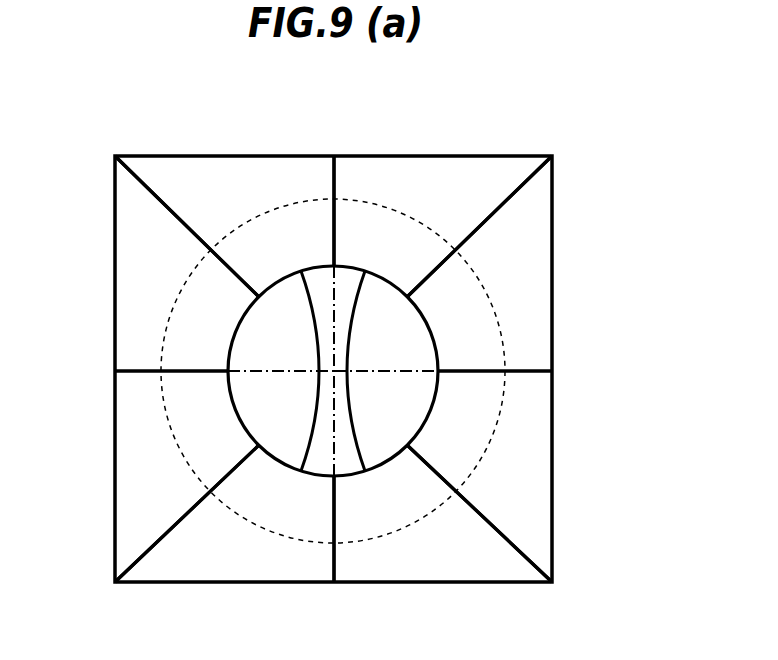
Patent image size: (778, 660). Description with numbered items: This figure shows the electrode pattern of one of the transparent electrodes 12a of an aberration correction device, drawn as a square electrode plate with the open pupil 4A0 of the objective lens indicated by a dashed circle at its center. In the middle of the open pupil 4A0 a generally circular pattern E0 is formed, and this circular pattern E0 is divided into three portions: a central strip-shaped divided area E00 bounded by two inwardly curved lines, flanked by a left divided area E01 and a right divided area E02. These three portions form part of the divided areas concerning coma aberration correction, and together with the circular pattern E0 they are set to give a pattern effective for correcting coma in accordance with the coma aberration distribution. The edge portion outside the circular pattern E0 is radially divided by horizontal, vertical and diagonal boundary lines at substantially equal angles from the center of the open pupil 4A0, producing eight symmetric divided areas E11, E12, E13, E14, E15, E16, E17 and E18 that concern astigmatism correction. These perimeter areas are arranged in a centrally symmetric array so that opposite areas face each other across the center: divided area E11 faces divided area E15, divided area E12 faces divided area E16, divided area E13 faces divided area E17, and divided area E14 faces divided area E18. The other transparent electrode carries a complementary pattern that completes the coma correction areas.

The transparent electrode 12a is at (540, 157).
The open pupil 4A0 is at (503, 338).
The generally circular pattern E0 is at (428, 415).
The divided area E00 is at (322, 455).
The divided area E01 is at (283, 435).
The divided area E02 is at (383, 438).
The divided area E11 is at (443, 173).
The divided area E12 is at (527, 255).
The divided area E13 is at (527, 535).
The divided area E14 is at (510, 570).
The divided area E15 is at (175, 557).
The divided area E16 is at (140, 487).
The divided area E17 is at (137, 248).
The divided area E18 is at (243, 165).